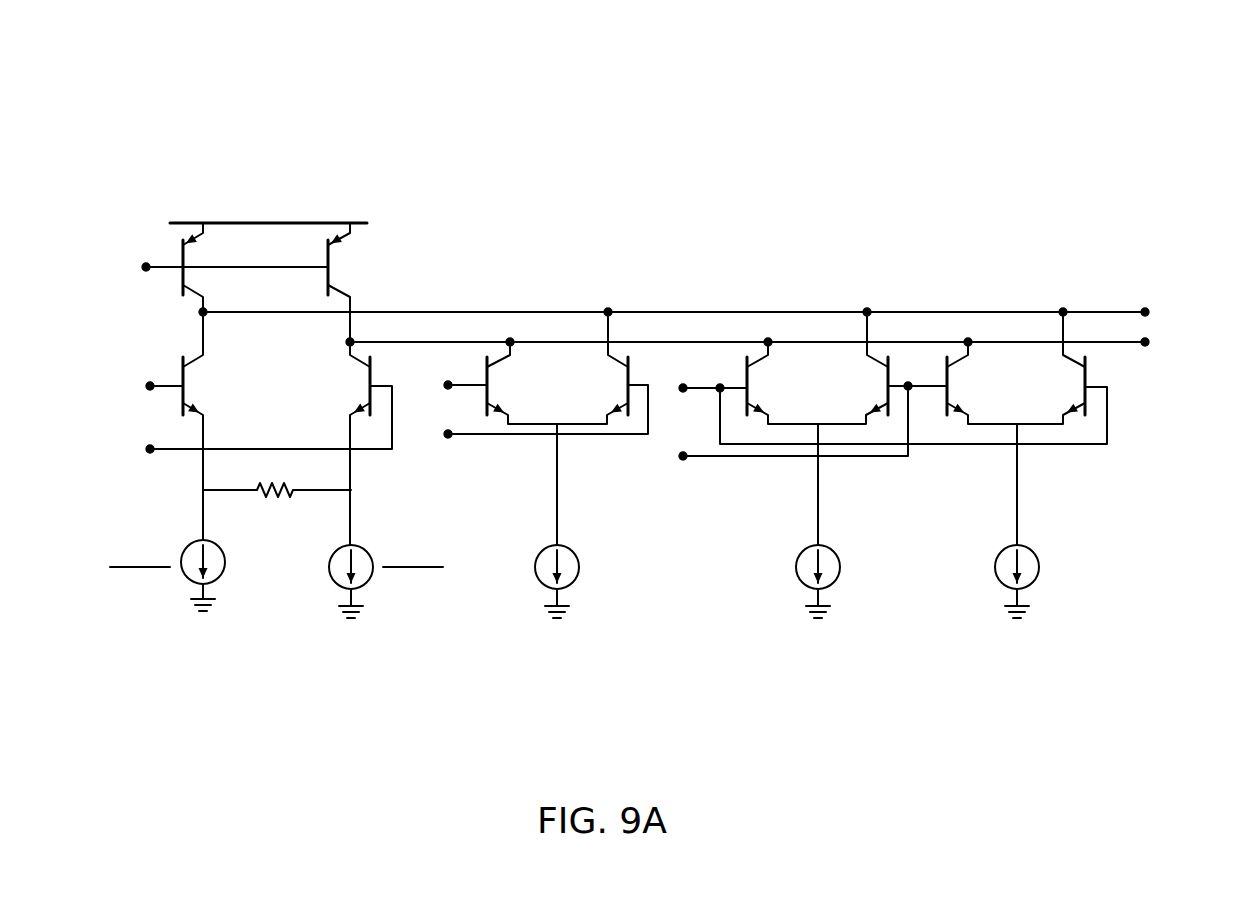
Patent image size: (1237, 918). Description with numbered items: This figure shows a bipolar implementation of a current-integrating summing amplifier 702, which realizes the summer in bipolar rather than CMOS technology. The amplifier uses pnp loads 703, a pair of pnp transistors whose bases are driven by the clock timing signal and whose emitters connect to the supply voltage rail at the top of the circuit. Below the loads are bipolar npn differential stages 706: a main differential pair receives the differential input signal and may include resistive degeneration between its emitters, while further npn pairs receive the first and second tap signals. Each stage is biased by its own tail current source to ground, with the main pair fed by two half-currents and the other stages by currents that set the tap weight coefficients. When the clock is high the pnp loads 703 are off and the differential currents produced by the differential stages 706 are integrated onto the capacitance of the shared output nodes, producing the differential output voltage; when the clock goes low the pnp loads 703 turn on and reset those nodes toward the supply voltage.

The current-integrating summing amplifier 702 is at (713, 38).
The pnp loads 703 is at (165, 248).
The bipolar npn differential stages 706 is at (170, 361).